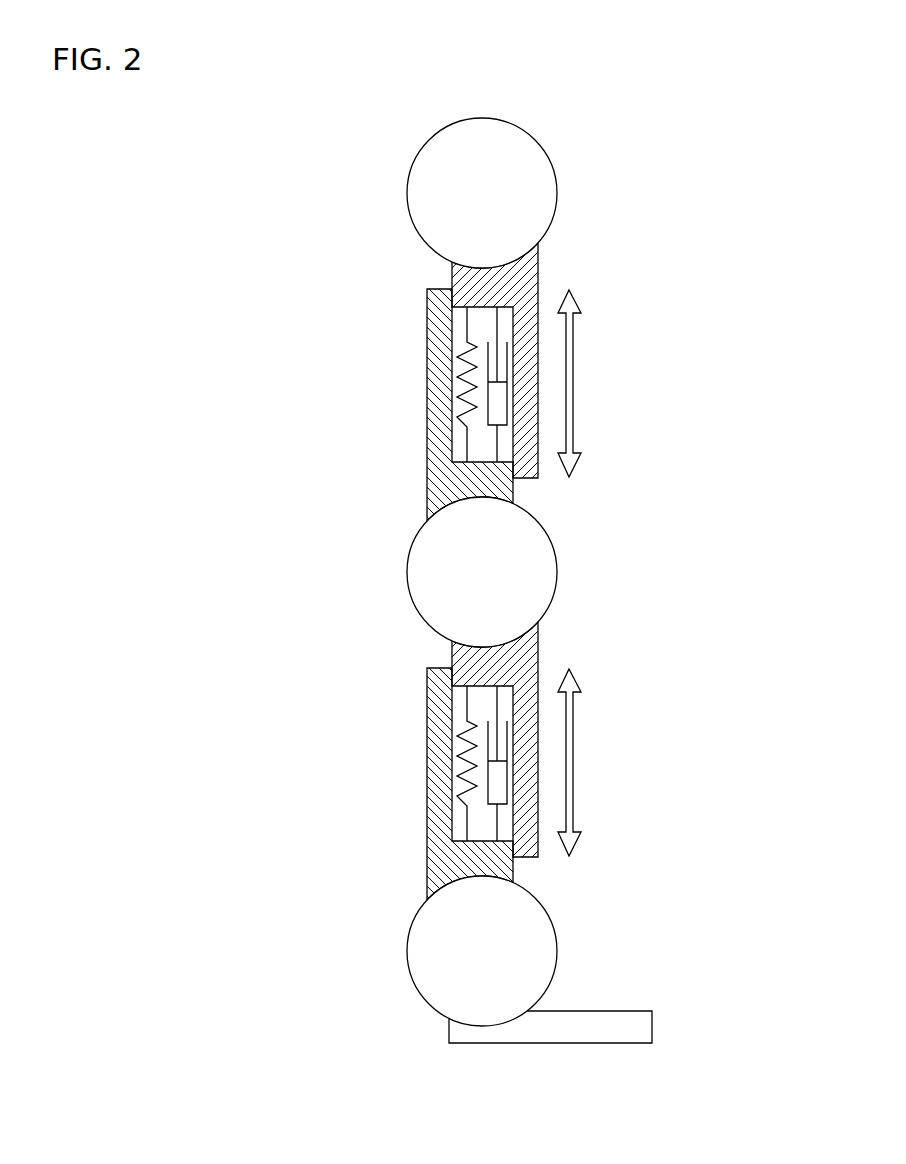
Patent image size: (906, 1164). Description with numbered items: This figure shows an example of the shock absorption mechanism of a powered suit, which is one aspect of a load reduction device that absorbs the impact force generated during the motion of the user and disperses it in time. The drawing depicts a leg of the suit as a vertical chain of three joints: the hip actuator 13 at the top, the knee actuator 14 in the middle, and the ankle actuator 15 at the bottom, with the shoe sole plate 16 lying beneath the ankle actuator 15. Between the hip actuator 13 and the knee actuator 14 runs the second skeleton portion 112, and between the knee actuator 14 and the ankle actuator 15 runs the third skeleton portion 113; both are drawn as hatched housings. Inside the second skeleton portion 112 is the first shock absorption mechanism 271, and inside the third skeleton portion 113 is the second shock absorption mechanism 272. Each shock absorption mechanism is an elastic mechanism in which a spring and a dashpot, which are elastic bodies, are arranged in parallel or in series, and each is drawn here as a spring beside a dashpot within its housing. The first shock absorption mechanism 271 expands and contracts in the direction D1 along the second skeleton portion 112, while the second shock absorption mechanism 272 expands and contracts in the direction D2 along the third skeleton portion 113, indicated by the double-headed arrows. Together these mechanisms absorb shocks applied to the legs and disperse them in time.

The second skeleton portion 112 is at (427, 388).
The third skeleton portion 113 is at (427, 767).
The hip actuator 13 is at (537, 193).
The knee actuator 14 is at (537, 572).
The ankle actuator 15 is at (537, 943).
The shoe sole plate 16 is at (643, 1027).
The first shock absorption mechanism 271 is at (507, 395).
The second shock absorption mechanism 272 is at (507, 774).
The direction D1 is at (574, 370).
The direction D2 is at (574, 749).